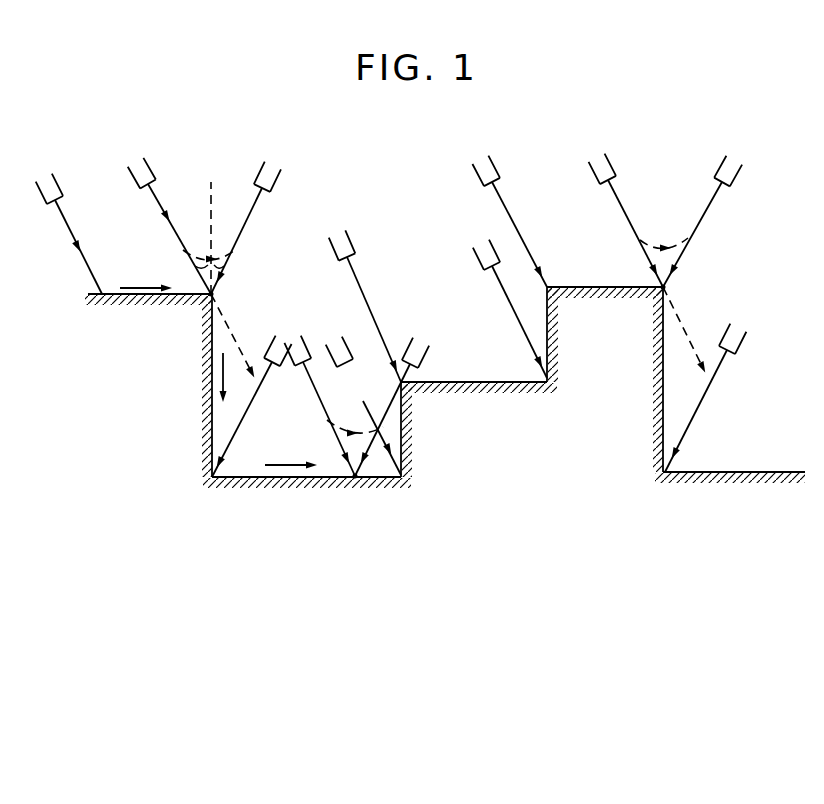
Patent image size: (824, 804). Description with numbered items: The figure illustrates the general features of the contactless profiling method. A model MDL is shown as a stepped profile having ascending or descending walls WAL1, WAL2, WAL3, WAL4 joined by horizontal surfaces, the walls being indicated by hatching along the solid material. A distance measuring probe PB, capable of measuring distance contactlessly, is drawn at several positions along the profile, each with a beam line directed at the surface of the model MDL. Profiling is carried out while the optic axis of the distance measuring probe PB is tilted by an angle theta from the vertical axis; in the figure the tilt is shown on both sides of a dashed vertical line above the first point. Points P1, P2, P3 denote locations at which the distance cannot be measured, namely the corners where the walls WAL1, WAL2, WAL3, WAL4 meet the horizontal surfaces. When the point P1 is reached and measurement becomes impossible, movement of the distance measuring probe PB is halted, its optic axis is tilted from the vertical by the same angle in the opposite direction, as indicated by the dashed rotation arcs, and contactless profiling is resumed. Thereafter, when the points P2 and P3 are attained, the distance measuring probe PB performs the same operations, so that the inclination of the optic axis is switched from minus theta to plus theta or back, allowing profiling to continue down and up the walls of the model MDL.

The distance measuring probe PB is at (55, 179).
The point at which distance cannot be measured P1 is at (188, 292).
The point at which distance cannot be measured P2 is at (326, 449).
The point at which distance cannot be measured P3 is at (667, 278).
The wall WAL1 is at (210, 418).
The wall WAL2 is at (401, 430).
The wall WAL3 is at (547, 318).
The wall WAL4 is at (663, 400).
The model MDL is at (484, 465).